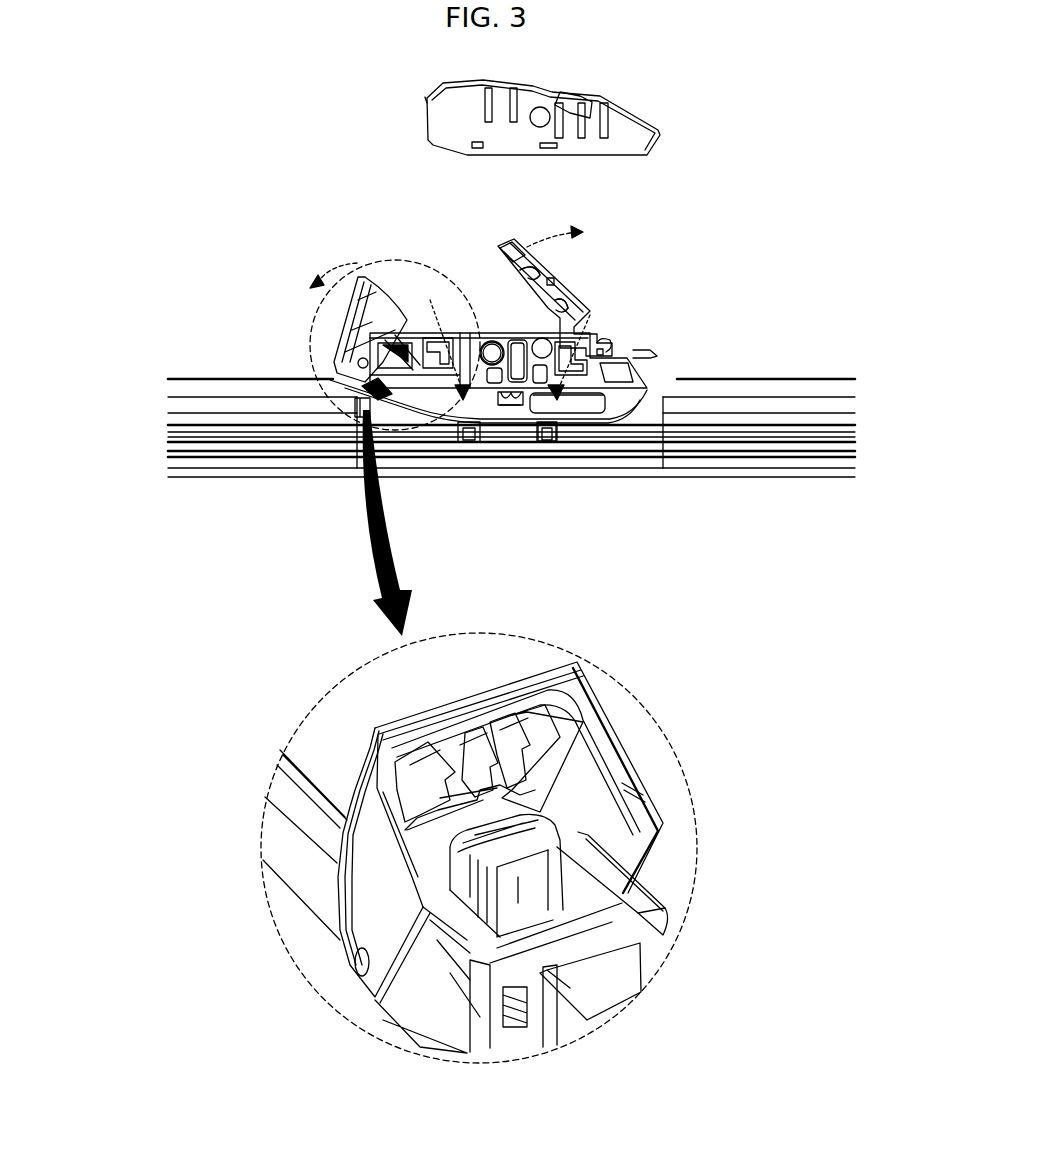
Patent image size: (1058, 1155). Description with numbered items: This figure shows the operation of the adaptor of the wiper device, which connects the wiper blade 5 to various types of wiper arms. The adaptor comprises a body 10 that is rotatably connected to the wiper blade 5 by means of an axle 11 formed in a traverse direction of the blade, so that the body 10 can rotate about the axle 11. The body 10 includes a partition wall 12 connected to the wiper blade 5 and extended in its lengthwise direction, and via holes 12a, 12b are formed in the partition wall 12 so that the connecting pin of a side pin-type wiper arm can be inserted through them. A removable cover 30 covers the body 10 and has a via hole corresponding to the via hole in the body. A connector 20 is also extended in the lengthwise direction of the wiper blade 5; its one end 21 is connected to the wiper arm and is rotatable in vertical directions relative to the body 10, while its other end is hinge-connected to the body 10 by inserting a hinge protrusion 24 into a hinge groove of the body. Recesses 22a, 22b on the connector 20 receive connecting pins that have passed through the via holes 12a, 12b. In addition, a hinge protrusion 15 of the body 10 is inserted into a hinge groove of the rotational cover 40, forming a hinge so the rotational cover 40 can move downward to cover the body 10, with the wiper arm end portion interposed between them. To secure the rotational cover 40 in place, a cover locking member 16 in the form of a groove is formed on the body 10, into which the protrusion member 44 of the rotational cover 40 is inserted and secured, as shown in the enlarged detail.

The wiper blade 5 is at (726, 410).
The body 10 is at (642, 386).
The axle 11 is at (507, 402).
The partition wall 12 is at (553, 400).
The via hole 12a is at (490, 362).
The via hole 12b is at (572, 425).
The hinge protrusion 15 is at (365, 400).
The cover locking member 16 is at (537, 880).
The connector 20 is at (590, 290).
The one end 21 is at (512, 243).
The recess 22a is at (482, 310).
The recess 22b is at (438, 310).
The hinge protrusion 24 is at (607, 350).
The removable cover 30 is at (630, 101).
The rotational cover 40 is at (340, 345).
The protrusion member 44 is at (450, 812).